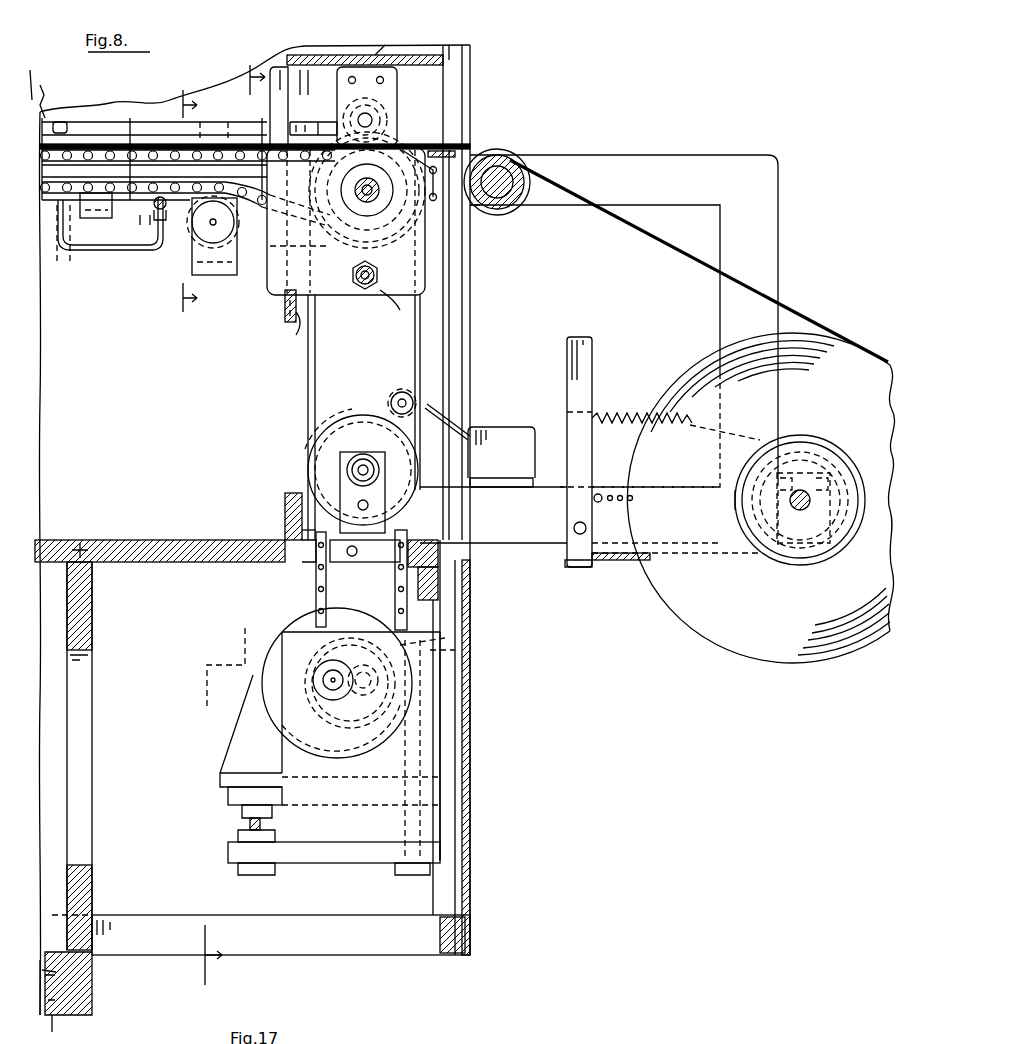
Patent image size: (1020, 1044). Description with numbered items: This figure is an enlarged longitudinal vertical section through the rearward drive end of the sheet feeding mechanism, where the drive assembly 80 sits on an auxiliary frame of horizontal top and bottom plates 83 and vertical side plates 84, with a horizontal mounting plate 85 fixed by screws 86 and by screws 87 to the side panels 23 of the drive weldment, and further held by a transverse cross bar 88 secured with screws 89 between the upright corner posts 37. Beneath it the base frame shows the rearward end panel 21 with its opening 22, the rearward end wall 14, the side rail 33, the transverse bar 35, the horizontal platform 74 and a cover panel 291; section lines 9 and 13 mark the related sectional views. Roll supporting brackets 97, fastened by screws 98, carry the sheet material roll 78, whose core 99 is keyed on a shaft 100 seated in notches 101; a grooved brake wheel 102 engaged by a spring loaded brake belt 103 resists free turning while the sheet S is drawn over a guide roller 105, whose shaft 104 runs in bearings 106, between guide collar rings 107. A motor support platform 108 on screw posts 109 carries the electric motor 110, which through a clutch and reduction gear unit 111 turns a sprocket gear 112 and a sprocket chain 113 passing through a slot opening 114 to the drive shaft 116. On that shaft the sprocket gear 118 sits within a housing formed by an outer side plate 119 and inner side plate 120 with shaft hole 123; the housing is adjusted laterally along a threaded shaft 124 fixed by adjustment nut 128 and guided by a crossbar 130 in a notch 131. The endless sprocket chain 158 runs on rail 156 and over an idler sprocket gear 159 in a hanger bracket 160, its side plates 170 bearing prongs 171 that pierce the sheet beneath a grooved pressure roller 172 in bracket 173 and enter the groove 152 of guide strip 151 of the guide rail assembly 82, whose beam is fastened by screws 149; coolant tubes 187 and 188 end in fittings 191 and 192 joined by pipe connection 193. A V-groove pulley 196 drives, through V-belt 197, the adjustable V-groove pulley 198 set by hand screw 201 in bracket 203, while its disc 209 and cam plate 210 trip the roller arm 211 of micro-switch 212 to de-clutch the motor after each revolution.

The drive assembly 80 is at (457, 100).
The sprocket chain carrier guide rail assembly 82 is at (112, 119).
The side plate 170 is at (145, 157).
The prongs 171 is at (133, 118).
The longitudinal groove 152 is at (200, 118).
The guide strip 151 is at (230, 118).
The rail 156 is at (252, 125).
The screws 149 is at (305, 121).
The forward end wall 13 is at (172, 199).
The section line 9— 9 is at (222, 525).
The hanger bracket 160 is at (212, 275).
The pipe connection 193 is at (100, 252).
The lower tube 188 is at (54, 242).
The endless sprocket chain 158 is at (105, 216).
The idler sprocket gear 159 is at (160, 222).
The fitting 192 is at (148, 226).
The fitting 191 is at (58, 120).
The upper tube 187 is at (42, 81).
The inner side plate 120 is at (275, 240).
The drive shaft 116 is at (367, 190).
The shaft receiving hole 123 is at (364, 178).
The V-groove pulley 196 is at (382, 275).
The threaded shaft 124 is at (368, 288).
The adjustment nut 128 is at (398, 303).
The sprocket gear 118 is at (316, 290).
The notch 131 is at (283, 305).
The crossbar 130 is at (297, 330).
The outer side plate 119 is at (275, 65).
The bracket 173 is at (348, 106).
The grooved pressure roller 172 is at (345, 118).
The top and bottom plates 83 is at (380, 52).
The screws 98 is at (428, 148).
The shaft 104 is at (508, 210).
The guide roller 105 is at (520, 168).
The bearings 106 is at (525, 185).
The guide collar rings 107 is at (505, 150).
The roll supporting bracket 97 is at (632, 162).
The sheet S is at (660, 228).
The vertical side plate 84 is at (443, 330).
The sheet material roll 78 is at (792, 658).
The core 99 is at (825, 462).
The shaft 100 is at (798, 512).
The notches 101 is at (820, 508).
The grooved brake wheel 102 is at (735, 510).
The brake belt 103 is at (745, 430).
The micro-switch 212 is at (524, 427).
The roller arm 211 is at (443, 420).
The screws 86 is at (357, 562).
The adjustable V-groove pulley 198 is at (345, 418).
The hand screw 201 is at (363, 462).
The bracket 203 is at (380, 472).
The cam plate 210 is at (395, 410).
The disc 209 is at (331, 408).
The V-belt 197 is at (416, 345).
The slot opening 114 is at (309, 516).
The horizontal mounting plate 85 is at (205, 540).
The screws 87 is at (82, 542).
The side panel 23 is at (52, 570).
The rearward end panel 21 is at (92, 620).
The rectangular opening 22 is at (88, 866).
The rearward end wall 14 is at (92, 997).
The horizontal platform 74 is at (50, 1007).
The sprocket chain 113 is at (315, 588).
The sprocket gear 112 is at (390, 610).
The transverse cross bar 88 is at (440, 606).
The screws 89 is at (452, 590).
The upright corner post 37 is at (462, 655).
The cover panel 291 is at (470, 755).
The clutch and reduction gear unit 111 is at (453, 635).
The electric motor 110 is at (278, 632).
The motor support platform 108 is at (228, 795).
The screw posts 109 is at (248, 826).
The side rail 33 is at (335, 945).
The transverse bar 35 is at (445, 955).